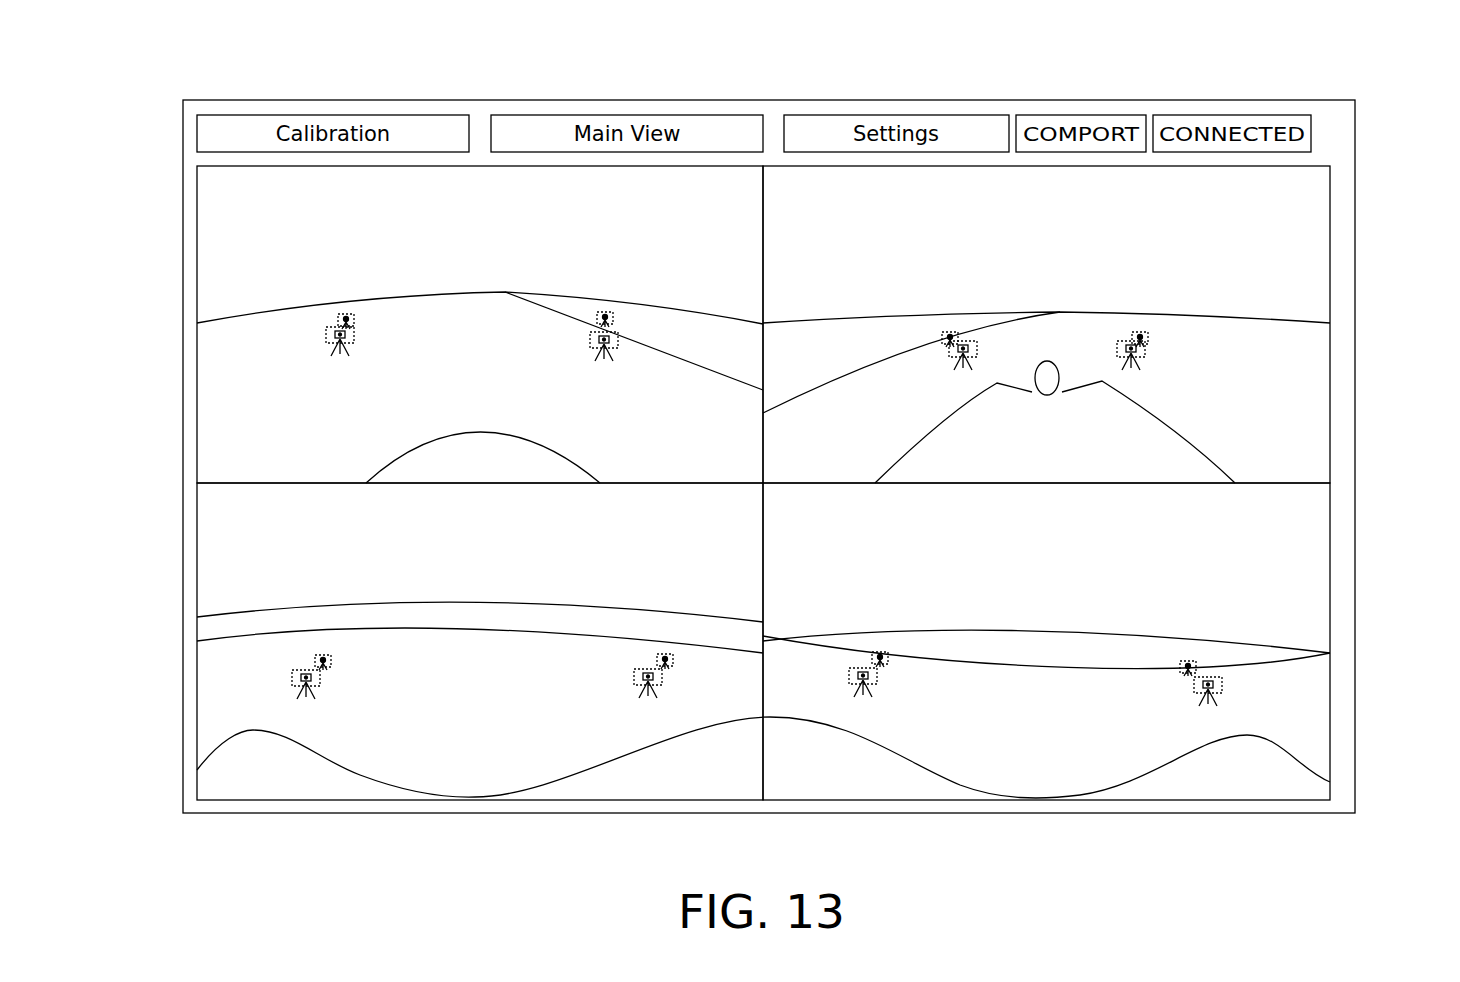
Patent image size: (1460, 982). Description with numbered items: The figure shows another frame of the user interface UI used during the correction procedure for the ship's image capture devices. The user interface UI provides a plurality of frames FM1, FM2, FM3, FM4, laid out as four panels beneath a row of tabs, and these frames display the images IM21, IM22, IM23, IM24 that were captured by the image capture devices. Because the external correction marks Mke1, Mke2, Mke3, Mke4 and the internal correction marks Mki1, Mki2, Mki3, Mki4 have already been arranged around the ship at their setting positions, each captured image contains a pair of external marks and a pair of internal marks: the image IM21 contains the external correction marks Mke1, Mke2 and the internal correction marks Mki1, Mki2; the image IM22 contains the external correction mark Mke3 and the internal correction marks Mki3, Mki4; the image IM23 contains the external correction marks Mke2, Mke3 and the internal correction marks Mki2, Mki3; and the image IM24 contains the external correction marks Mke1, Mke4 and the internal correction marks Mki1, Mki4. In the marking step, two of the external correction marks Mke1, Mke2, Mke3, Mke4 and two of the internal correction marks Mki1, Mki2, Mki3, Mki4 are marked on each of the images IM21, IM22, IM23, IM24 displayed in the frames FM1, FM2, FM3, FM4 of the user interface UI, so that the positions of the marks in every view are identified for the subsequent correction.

The user interface UI is at (1385, 108).
The frame FM1 is at (710, 165).
The frame FM2 is at (1333, 347).
The frame FM3 is at (1170, 803).
The frame FM4 is at (390, 805).
The image IM21 is at (483, 186).
The image IM22 is at (1300, 404).
The image IM23 is at (1300, 706).
The image IM24 is at (307, 735).
The external correction mark Mke1 is at (345, 315).
The external correction mark Mke2 is at (614, 317).
The external correction mark Mke3 is at (950, 330).
The external correction mark Mke4 is at (1143, 330).
The internal correction mark Mki1 is at (328, 337).
The internal correction mark Mki2 is at (619, 342).
The internal correction mark Mki3 is at (966, 342).
The internal correction mark Mki4 is at (1146, 350).